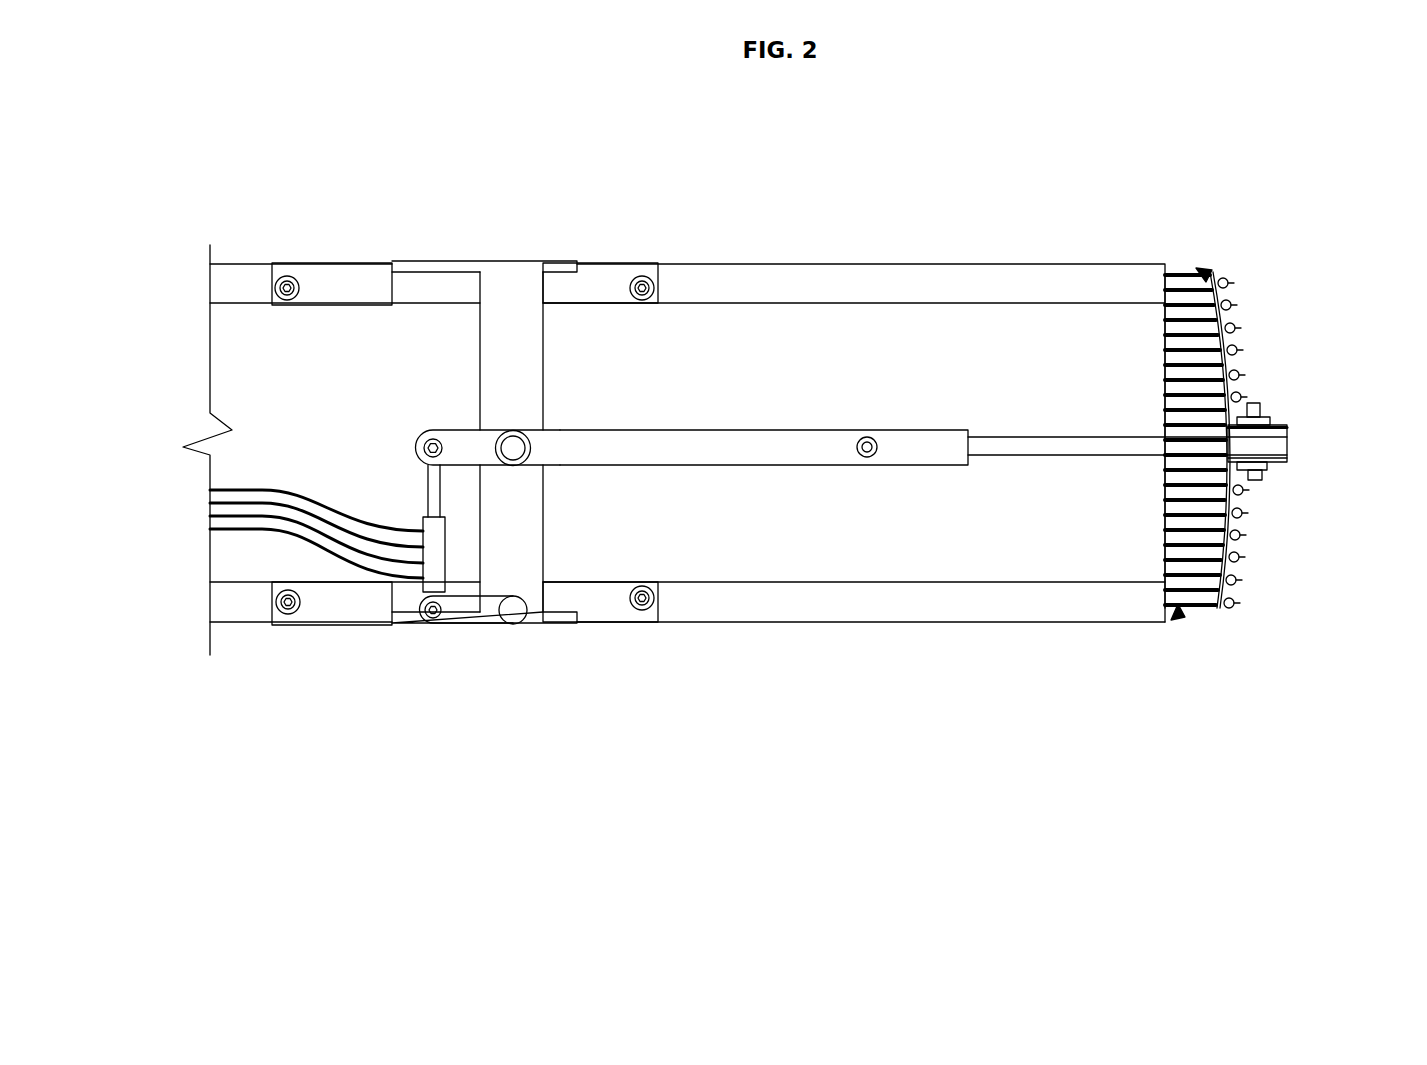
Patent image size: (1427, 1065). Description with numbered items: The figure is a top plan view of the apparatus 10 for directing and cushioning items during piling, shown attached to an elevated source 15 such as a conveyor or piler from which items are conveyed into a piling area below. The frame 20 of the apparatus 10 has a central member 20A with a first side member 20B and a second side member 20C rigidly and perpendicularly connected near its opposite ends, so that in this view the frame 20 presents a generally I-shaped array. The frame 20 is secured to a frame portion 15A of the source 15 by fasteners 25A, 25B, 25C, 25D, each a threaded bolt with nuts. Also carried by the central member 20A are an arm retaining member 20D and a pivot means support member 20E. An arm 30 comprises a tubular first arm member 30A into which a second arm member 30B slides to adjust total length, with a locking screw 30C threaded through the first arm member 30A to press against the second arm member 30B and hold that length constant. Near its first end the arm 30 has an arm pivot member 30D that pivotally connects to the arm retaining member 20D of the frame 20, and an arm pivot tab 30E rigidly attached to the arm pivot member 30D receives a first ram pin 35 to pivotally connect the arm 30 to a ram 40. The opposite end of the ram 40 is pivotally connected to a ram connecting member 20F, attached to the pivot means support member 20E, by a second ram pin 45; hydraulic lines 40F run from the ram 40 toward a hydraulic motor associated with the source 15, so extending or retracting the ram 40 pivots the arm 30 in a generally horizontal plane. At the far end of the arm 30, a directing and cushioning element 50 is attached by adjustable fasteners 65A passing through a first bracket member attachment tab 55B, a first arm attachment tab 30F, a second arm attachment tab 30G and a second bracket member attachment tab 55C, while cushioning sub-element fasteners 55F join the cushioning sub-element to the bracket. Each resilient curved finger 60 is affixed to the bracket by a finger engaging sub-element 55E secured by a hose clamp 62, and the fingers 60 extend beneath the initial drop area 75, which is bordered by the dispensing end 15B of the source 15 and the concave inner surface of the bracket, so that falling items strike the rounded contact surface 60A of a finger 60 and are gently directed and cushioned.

The apparatus 10 is at (668, 185).
The elevated source 15 is at (985, 585).
The frame portion 15A is at (790, 283).
The dispensing end 15B is at (1175, 275).
The frame 20 is at (476, 372).
The central member 20A is at (517, 287).
The first side member 20B is at (352, 275).
The second side member 20C is at (332, 627).
The arm retaining member 20D is at (511, 430).
The pivot means support member 20E is at (512, 625).
The ram connecting member 20F is at (470, 624).
The fastener 25A is at (268, 627).
The fastener 25B is at (647, 610).
The fastener 25C is at (287, 275).
The fastener 25D is at (647, 280).
The arm 30 is at (968, 447).
The first arm member 30A is at (806, 465).
The second arm member 30B is at (1052, 455).
The locking screw 30C is at (867, 458).
The arm pivot member 30D is at (533, 450).
The arm pivot tab 30E is at (462, 442).
The first arm attachment tab 30F is at (1277, 460).
The second arm attachment tab 30G is at (1287, 428).
The first ram pin 35 is at (418, 442).
The ram 40 is at (424, 530).
The hydraulic lines 40F is at (270, 530).
The second ram pin 45 is at (432, 618).
The directing and cushioning element 50 is at (1253, 403).
The first bracket member attachment tab 55B is at (1270, 467).
The second bracket member attachment tab 55C is at (1270, 422).
The finger engaging sub-element 55E is at (1240, 302).
The cushioning sub-element fastener 55F is at (1240, 592).
The finger 60 is at (1240, 320).
The contact surface 60A is at (1207, 277).
The hose clamp 62 is at (1240, 282).
The adjustable fastener 65A is at (1253, 403).
The initial drop area 75 is at (1200, 292).